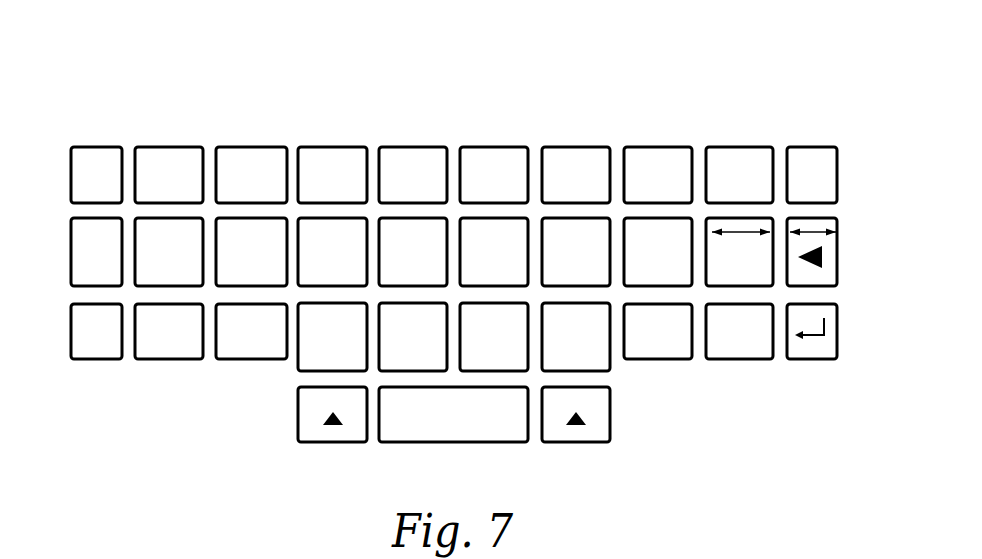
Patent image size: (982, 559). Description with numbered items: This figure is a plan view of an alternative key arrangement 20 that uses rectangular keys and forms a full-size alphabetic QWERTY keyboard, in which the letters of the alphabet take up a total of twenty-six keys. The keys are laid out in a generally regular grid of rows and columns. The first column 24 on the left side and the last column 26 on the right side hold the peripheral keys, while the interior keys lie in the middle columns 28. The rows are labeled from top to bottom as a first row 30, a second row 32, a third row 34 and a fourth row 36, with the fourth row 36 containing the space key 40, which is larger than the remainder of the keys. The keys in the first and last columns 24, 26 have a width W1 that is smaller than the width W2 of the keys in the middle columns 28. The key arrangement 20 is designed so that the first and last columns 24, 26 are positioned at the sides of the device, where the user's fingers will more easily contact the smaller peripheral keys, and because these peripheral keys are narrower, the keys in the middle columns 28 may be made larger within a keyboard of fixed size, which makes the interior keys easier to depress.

The key arrangement 20 is at (692, 42).
The first column 24 is at (97, 147).
The last column 26 is at (820, 147).
The middle columns 28 is at (170, 147).
The first row 30 is at (71, 171).
The second row 32 is at (71, 254).
The third row 34 is at (71, 337).
The fourth row 36 is at (299, 420).
The space key 40 is at (465, 440).
The width of peripheral keys W1 is at (813, 232).
The width of middle-column keys W2 is at (747, 232).